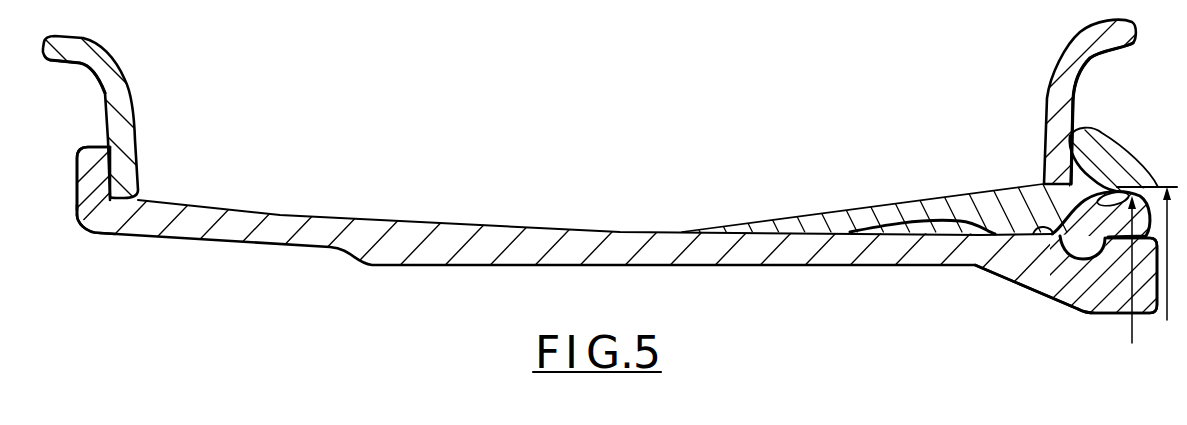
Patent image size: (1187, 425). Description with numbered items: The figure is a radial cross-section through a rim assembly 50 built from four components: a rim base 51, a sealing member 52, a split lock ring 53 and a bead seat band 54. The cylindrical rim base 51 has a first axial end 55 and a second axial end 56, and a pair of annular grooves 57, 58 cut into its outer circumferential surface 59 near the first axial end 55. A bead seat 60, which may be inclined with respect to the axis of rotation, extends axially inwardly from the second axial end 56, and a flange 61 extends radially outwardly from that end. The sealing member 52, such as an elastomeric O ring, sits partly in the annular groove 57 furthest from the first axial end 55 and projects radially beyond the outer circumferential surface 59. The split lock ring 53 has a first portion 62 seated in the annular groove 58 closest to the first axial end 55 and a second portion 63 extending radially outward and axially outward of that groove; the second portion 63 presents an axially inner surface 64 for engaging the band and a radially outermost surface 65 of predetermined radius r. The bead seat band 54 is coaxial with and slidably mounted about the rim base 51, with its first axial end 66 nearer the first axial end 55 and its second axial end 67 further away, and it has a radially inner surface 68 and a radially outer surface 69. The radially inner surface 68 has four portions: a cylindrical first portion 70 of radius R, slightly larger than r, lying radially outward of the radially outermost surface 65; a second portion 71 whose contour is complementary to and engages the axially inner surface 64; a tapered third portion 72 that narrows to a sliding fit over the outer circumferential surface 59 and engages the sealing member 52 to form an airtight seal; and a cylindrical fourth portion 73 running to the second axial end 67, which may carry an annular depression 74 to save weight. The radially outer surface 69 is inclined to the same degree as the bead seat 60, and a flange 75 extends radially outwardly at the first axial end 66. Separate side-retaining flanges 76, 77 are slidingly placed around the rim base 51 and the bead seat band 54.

The rim assembly 50 is at (262, 68).
The rim base 51 is at (483, 259).
The sealing member 52 is at (990, 266).
The split lock ring 53 is at (1130, 185).
The bead seat band 54 is at (808, 217).
The first axial end 55 is at (1157, 308).
The second axial end 56 is at (78, 214).
The annular groove 57 is at (1045, 247).
The annular groove 58 is at (1083, 280).
The outer circumferential surface 59 is at (576, 226).
The bead seat 60 is at (288, 218).
The flange 61 is at (88, 163).
The first portion of the lock ring 62 is at (1102, 258).
The second portion of the lock ring 63 is at (1157, 183).
The axially inner surface 64 is at (1105, 142).
The radially outermost surface 65 is at (1050, 110).
The first axial end 66 is at (1157, 177).
The second axial end 67 is at (687, 228).
The radially inner surface 68 is at (792, 240).
The radially outer surface 69 is at (878, 203).
The first portion of the radially inner surface 70 is at (1060, 120).
The second portion of the radially inner surface 71 is at (1033, 183).
The third portion of the radially inner surface 72 is at (1003, 187).
The fourth portion of the radially inner surface 73 is at (983, 197).
The annular depression 74 is at (937, 220).
The flange 75 is at (1085, 147).
The side-retaining flange 76 is at (122, 98).
The side-retaining flange 77 is at (1060, 70).
The predetermined radius r is at (1132, 343).
The radius R is at (1167, 320).